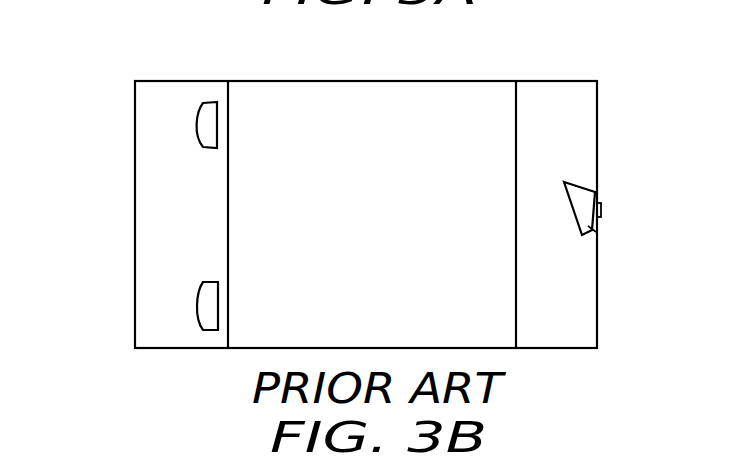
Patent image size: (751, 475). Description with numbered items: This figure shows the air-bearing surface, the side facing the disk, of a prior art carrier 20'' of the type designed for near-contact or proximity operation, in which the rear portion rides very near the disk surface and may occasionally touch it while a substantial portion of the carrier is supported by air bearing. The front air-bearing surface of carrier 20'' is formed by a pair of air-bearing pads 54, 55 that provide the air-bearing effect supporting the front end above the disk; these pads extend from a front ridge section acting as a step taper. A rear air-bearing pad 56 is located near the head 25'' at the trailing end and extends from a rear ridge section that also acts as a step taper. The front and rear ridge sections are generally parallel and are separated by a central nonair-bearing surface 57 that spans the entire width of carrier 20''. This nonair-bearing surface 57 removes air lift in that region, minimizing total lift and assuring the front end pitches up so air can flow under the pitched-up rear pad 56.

The carrier 20'' is at (384, 181).
The air-bearing pad 54 is at (213, 105).
The air-bearing pad 55 is at (212, 322).
The rear air-bearing pad 56 is at (592, 236).
The central nonair-bearing surface 57 is at (358, 93).
The head 25'' is at (640, 205).